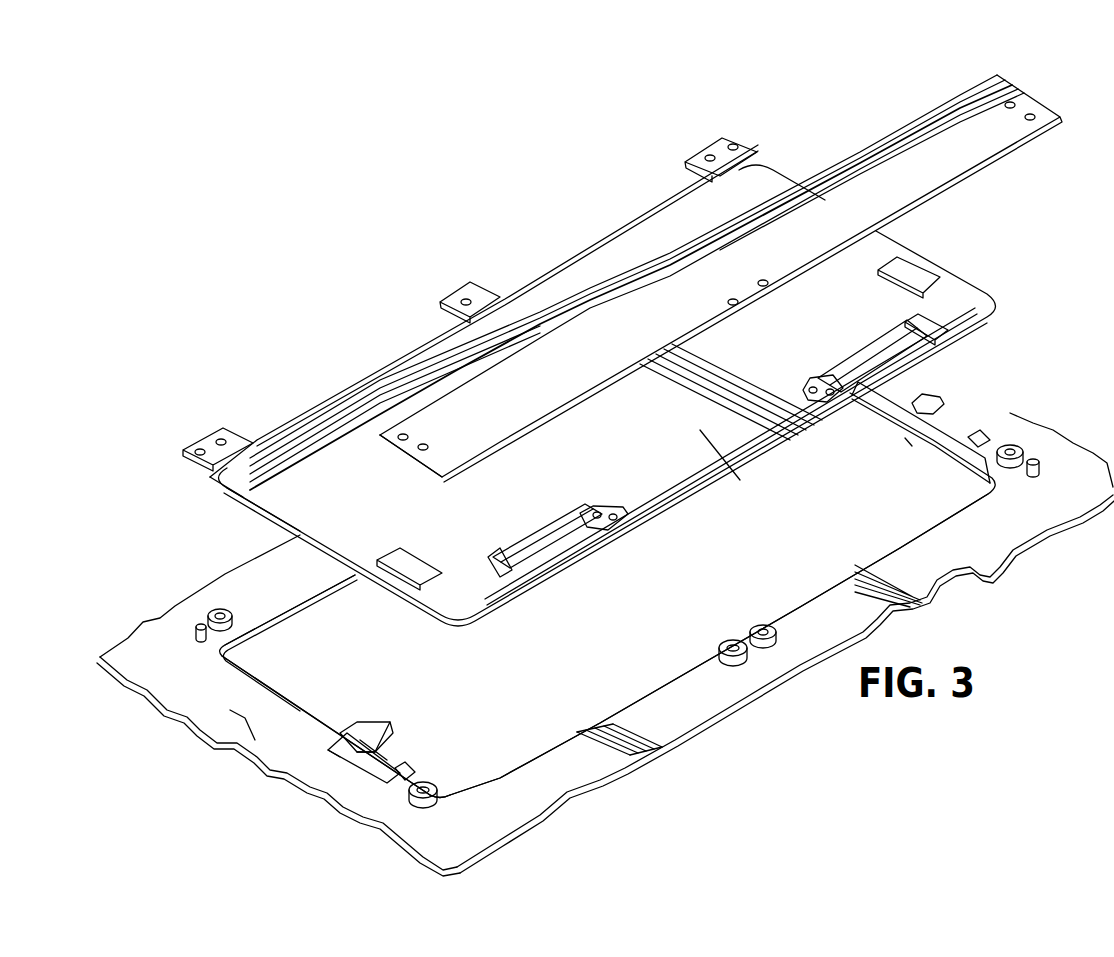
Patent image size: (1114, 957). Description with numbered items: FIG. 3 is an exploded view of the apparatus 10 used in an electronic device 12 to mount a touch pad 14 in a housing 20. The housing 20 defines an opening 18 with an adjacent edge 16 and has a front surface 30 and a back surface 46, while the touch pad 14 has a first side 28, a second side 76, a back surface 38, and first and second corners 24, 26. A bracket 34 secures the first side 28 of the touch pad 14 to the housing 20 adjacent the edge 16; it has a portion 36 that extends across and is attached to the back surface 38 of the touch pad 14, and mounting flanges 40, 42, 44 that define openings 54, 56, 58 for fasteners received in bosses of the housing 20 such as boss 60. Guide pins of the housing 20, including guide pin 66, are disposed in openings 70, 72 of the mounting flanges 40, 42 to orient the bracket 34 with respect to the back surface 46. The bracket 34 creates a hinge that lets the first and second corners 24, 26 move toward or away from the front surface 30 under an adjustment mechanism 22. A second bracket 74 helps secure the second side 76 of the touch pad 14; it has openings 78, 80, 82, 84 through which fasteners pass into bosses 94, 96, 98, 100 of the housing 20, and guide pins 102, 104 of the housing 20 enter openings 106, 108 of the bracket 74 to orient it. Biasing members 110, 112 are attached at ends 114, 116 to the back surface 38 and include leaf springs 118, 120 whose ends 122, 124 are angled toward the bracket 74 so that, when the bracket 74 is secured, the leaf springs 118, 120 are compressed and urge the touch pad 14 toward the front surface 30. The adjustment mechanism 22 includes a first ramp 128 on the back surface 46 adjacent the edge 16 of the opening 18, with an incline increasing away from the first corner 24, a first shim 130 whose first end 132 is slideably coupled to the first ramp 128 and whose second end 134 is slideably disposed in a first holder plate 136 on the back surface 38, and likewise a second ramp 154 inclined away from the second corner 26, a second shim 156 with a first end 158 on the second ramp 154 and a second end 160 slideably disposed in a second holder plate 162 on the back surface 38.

The apparatus 10 is at (978, 404).
The electronic device 12 is at (222, 572).
The touch pad 14 is at (737, 470).
The edge 16 is at (303, 710).
The opening 18 is at (636, 660).
The housing 20 is at (540, 758).
The adjustment mechanism 22 is at (372, 770).
The first corner 24 is at (1004, 305).
The second corner 26 is at (460, 628).
The first side 28 is at (224, 490).
The front surface 30 is at (967, 578).
The bracket 34 is at (390, 360).
The portion 36 is at (612, 250).
The back surface 38 is at (660, 418).
The mounting flange 40 is at (185, 458).
The mounting flange 42 is at (490, 292).
The mounting flange 44 is at (758, 150).
The back surface 46 is at (245, 722).
The opening 54 is at (221, 439).
The opening 56 is at (463, 299).
The opening 58 is at (708, 155).
The boss 60 is at (257, 623).
The guide pin 66 is at (203, 622).
The opening 70 is at (199, 449).
The opening 72 is at (733, 144).
The bracket 74 is at (878, 150).
The second side 76 is at (640, 522).
The opening 78 is at (420, 450).
The opening 80 is at (733, 298).
The opening 82 is at (765, 279).
The opening 84 is at (1015, 104).
The boss 94 is at (435, 803).
The boss 96 is at (731, 640).
The boss 98 is at (763, 624).
The boss 100 is at (1011, 468).
The guide pin 102 is at (417, 768).
The guide pin 104 is at (1041, 470).
The opening 106 is at (409, 435).
The opening 108 is at (1032, 121).
The biasing member 110 is at (526, 528).
The biasing member 112 is at (850, 342).
The end 114 is at (605, 505).
The end 116 is at (812, 383).
The leaf spring 118 is at (548, 532).
The leaf spring 120 is at (880, 344).
The end 122 is at (494, 556).
The end 124 is at (932, 327).
The first ramp 128 is at (988, 428).
The first shim 130 is at (893, 438).
The first end 132 is at (940, 398).
The second end 134 is at (908, 448).
The first holder plate 136 is at (915, 272).
The second ramp 154 is at (400, 760).
The second shim 156 is at (362, 725).
The first end 158 is at (340, 760).
The second end 160 is at (378, 722).
The second holder plate 162 is at (415, 565).